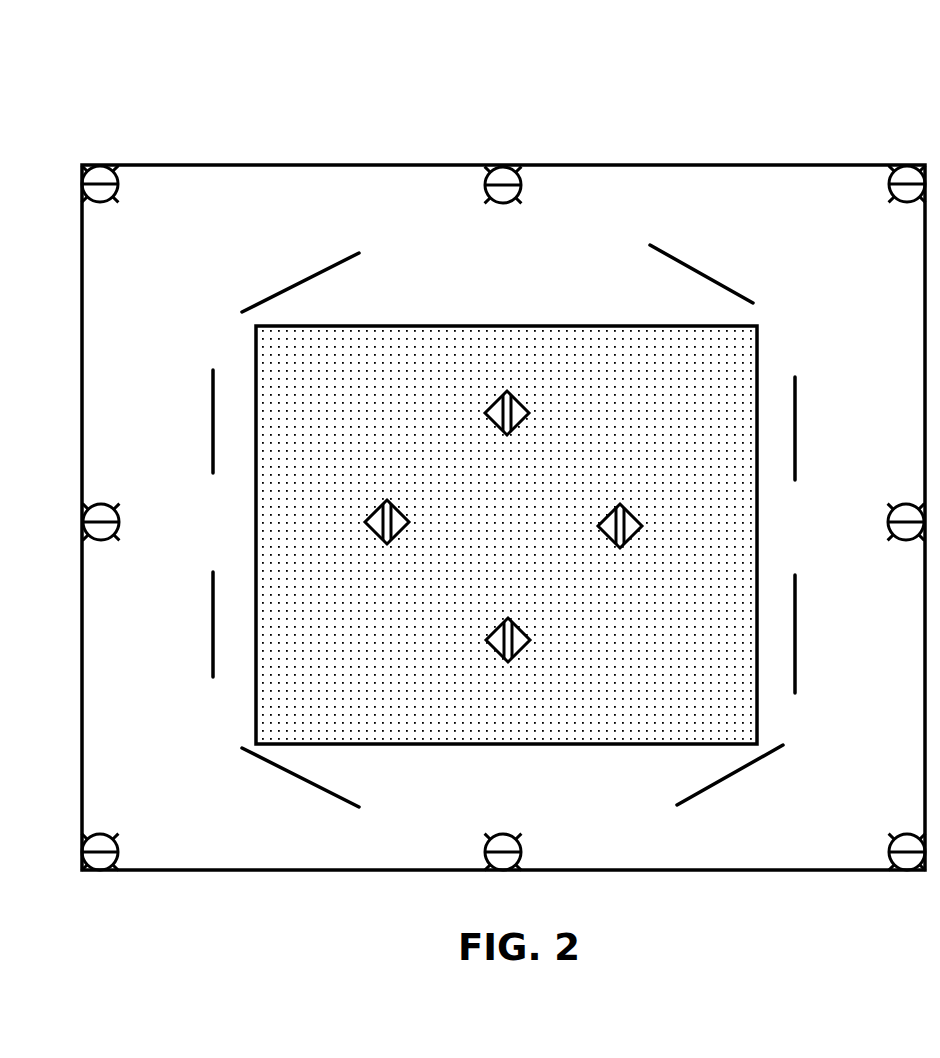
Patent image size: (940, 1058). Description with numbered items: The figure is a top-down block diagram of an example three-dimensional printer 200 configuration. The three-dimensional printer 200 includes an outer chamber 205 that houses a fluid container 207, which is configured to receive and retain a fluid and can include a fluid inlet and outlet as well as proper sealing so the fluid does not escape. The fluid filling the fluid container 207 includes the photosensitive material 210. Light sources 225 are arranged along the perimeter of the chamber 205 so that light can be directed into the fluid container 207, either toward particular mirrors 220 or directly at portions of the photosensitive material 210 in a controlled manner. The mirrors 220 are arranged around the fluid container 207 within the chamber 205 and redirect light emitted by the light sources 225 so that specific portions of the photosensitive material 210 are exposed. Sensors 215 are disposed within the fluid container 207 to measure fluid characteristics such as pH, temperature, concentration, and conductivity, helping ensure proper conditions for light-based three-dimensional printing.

The 3D printer 200 is at (747, 95).
The chamber 205 is at (280, 165).
The fluid container 207 is at (400, 325).
The photosensitive material 210 is at (585, 362).
The sensors 215 is at (633, 512).
The mirrors 220 is at (795, 405).
The light sources 225 is at (508, 178).